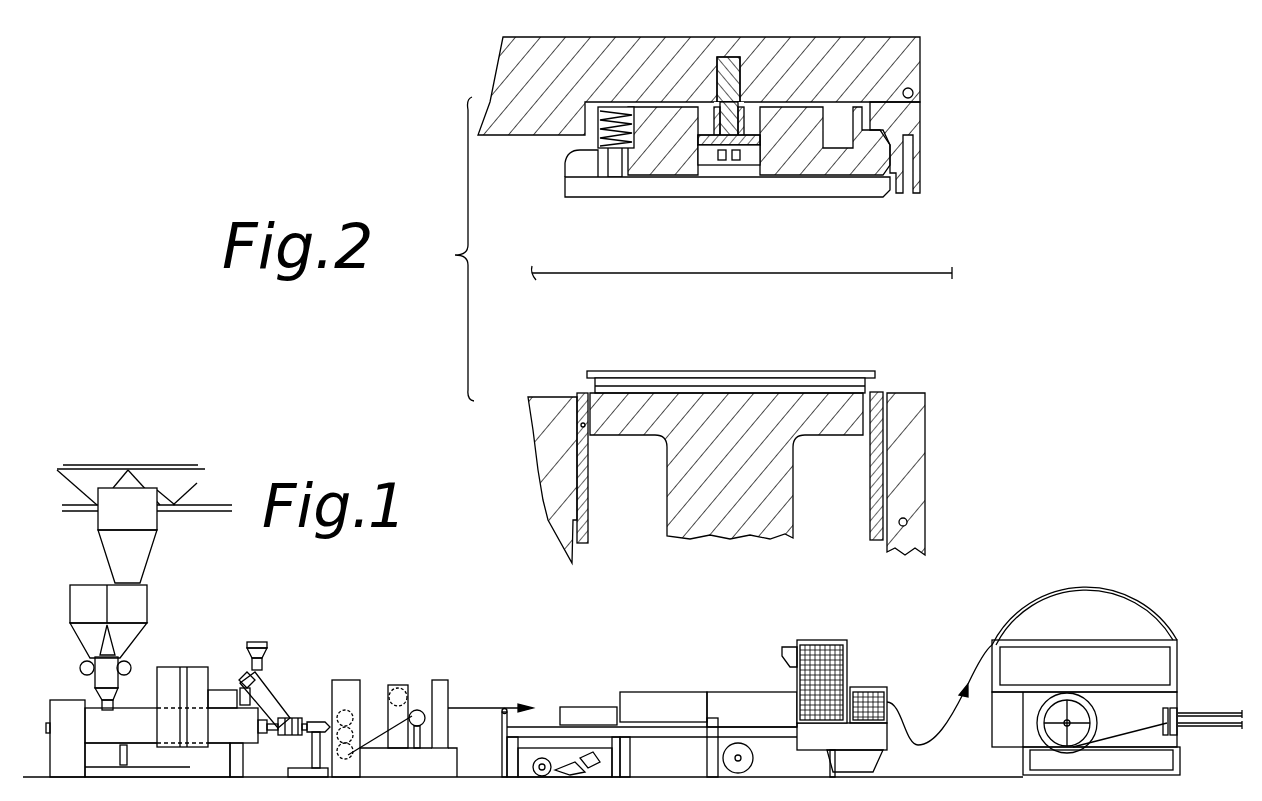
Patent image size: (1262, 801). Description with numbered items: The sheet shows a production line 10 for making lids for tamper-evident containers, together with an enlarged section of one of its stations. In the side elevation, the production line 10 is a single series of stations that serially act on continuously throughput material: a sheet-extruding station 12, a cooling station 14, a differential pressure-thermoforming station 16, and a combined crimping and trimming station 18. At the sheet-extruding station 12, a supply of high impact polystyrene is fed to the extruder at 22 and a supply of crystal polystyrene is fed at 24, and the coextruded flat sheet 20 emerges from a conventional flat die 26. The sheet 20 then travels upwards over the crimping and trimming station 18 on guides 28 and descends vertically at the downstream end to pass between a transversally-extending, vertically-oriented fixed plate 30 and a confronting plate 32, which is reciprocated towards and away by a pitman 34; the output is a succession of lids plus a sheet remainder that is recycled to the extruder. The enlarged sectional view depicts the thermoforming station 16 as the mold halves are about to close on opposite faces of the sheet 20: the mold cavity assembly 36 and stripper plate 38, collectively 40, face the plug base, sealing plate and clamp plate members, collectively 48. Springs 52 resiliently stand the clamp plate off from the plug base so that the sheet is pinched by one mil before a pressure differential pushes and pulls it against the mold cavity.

In FIG. 1, the production line 10 is at (352, 632).
In FIG. 1, the sheet-extruding station 12 is at (234, 635).
In FIG. 1, the cooling station 14 is at (399, 665).
In FIG. 2, the differential pressure-thermoforming station 16 is at (978, 398).
In FIG. 1, the differential pressure-thermoforming station 16 is at (709, 672).
In FIG. 1, the combined crimping and trimming station 18 is at (952, 626).
In FIG. 2, the flat sheet 20 is at (785, 273).
In FIG. 1, the flat sheet 20 is at (490, 708).
In FIG. 1, the extruder feed of high impact polystyrene 22 is at (100, 706).
In FIG. 1, the extruder feed of crystal polystyrene 24 is at (270, 660).
In FIG. 1, the flat die 26 is at (326, 720).
In FIG. 1, the guides 28 is at (1040, 605).
In FIG. 1, the fixed plate 30 is at (1178, 712).
In FIG. 1, the movable plate 32 is at (1160, 713).
In FIG. 1, the pitman 34 is at (1090, 697).
In FIG. 2, the mold cavity assembly 36 is at (775, 371).
In FIG. 2, the stripper plate 38 is at (554, 397).
In FIG. 2, the mold cavity assembly and stripper plate 40 is at (690, 350).
In FIG. 2, the plug base, sealing plate and clamp plate 48 is at (697, 212).
In FIG. 2, the springs 52 is at (600, 142).